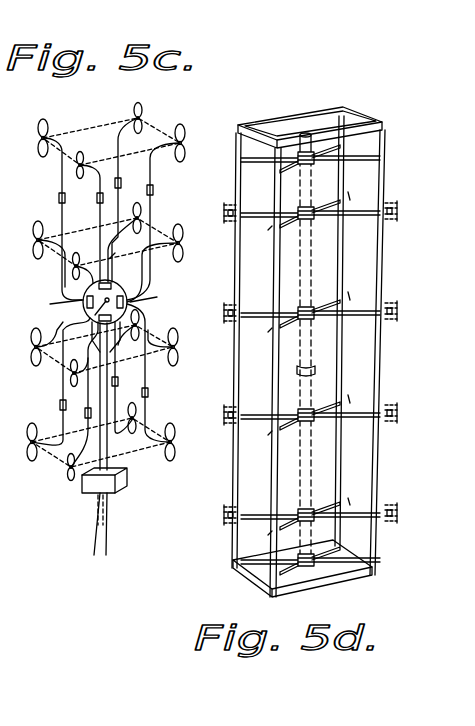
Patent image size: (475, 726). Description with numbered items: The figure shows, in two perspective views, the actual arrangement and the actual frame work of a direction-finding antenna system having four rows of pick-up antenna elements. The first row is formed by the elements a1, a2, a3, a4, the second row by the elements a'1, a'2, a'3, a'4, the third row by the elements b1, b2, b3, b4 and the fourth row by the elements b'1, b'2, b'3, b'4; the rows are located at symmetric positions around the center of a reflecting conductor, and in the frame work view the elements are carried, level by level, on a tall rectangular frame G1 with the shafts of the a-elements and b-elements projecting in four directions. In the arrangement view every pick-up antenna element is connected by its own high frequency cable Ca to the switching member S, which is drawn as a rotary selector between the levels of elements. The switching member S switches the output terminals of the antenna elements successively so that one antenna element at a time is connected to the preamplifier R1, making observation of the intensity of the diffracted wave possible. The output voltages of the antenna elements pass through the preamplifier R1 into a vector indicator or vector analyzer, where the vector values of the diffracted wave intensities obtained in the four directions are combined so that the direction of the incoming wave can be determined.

In FIG. 5C, the pick-up antenna element a1 is at (163, 212).
In FIG. 5D, the pick-up antenna element a1 is at (398, 210).
In FIG. 5C, the pick-up antenna element a'1 is at (60, 199).
In FIG. 5D, the pick-up antenna element a'1 is at (220, 213).
In FIG. 5C, the pick-up antenna element b1 is at (136, 188).
In FIG. 5D, the pick-up antenna element b1 is at (337, 197).
In FIG. 5C, the pick-up antenna element b'1 is at (90, 209).
In FIG. 5D, the pick-up antenna element b'1 is at (275, 230).
In FIG. 5C, the pick-up antenna element a2 is at (162, 263).
In FIG. 5D, the pick-up antenna element a2 is at (398, 311).
In FIG. 5C, the pick-up antenna element a'2 is at (41, 254).
In FIG. 5D, the pick-up antenna element a'2 is at (219, 313).
In FIG. 5C, the pick-up antenna element b2 is at (124, 243).
In FIG. 5D, the pick-up antenna element b2 is at (337, 297).
In FIG. 5C, the pick-up antenna element b'2 is at (83, 258).
In FIG. 5D, the pick-up antenna element b'2 is at (275, 331).
In FIG. 5C, the pick-up antenna element a3 is at (170, 347).
In FIG. 5D, the pick-up antenna element a3 is at (398, 413).
In FIG. 5C, the pick-up antenna element a'3 is at (36, 344).
In FIG. 5D, the pick-up antenna element a'3 is at (219, 415).
In FIG. 5C, the pick-up antenna element b3 is at (128, 328).
In FIG. 5D, the pick-up antenna element b3 is at (337, 399).
In FIG. 5C, the pick-up antenna element b'3 is at (81, 367).
In FIG. 5D, the pick-up antenna element b'3 is at (275, 433).
In FIG. 5C, the pick-up antenna element a4 is at (158, 383).
In FIG. 5D, the pick-up antenna element a4 is at (398, 513).
In FIG. 5C, the pick-up antenna element a'4 is at (49, 389).
In FIG. 5D, the pick-up antenna element a'4 is at (219, 515).
In FIG. 5C, the pick-up antenna element b4 is at (124, 378).
In FIG. 5D, the pick-up antenna element b4 is at (337, 501).
In FIG. 5C, the pick-up antenna element b'4 is at (73, 402).
In FIG. 5D, the pick-up antenna element b'4 is at (274, 533).
In FIG. 5C, the switching member S is at (105, 311).
In FIG. 5C, the cable conductor Ca is at (101, 276).
In FIG. 5C, the preamplifier R1 is at (113, 480).
In FIG. 5D, the frame G1 is at (308, 350).